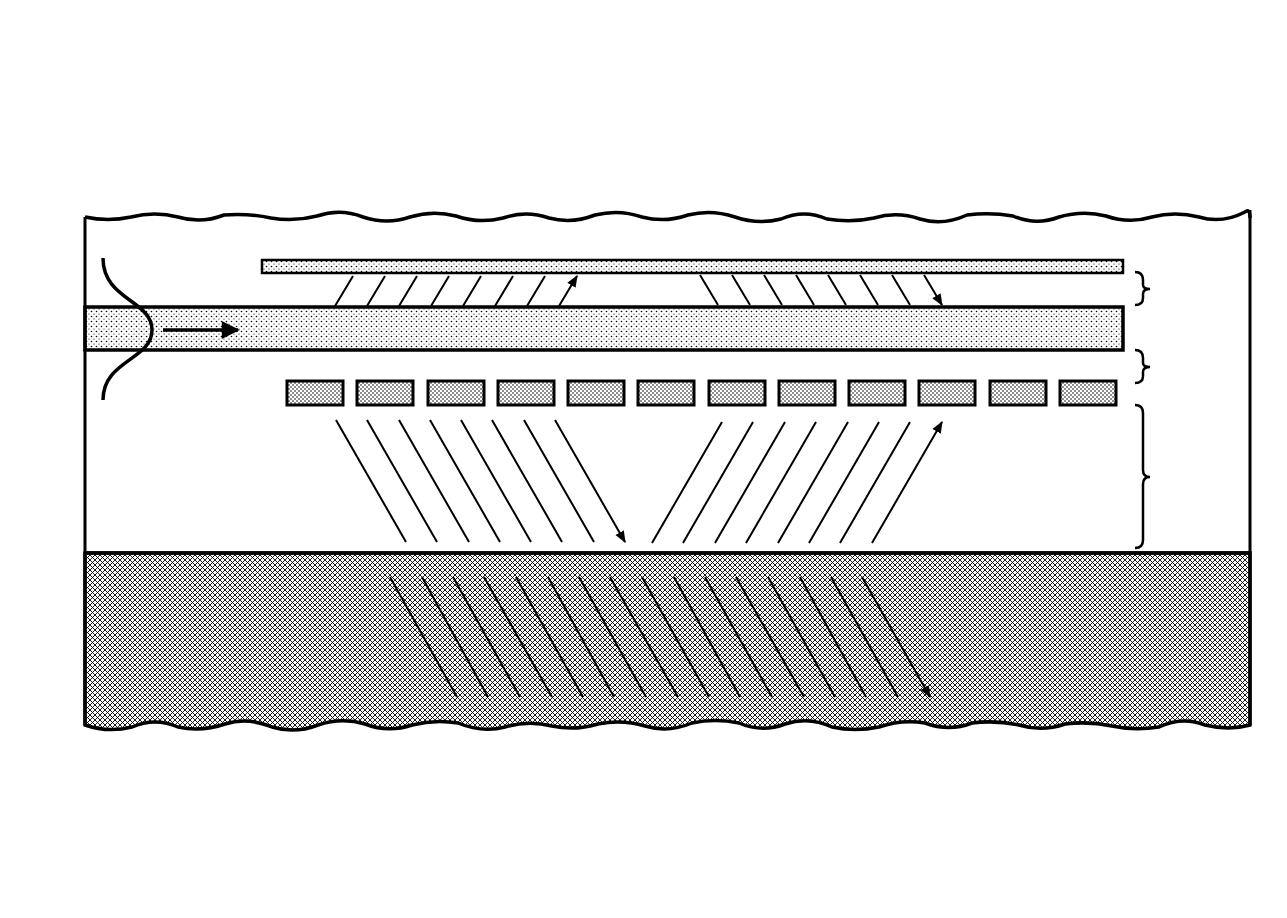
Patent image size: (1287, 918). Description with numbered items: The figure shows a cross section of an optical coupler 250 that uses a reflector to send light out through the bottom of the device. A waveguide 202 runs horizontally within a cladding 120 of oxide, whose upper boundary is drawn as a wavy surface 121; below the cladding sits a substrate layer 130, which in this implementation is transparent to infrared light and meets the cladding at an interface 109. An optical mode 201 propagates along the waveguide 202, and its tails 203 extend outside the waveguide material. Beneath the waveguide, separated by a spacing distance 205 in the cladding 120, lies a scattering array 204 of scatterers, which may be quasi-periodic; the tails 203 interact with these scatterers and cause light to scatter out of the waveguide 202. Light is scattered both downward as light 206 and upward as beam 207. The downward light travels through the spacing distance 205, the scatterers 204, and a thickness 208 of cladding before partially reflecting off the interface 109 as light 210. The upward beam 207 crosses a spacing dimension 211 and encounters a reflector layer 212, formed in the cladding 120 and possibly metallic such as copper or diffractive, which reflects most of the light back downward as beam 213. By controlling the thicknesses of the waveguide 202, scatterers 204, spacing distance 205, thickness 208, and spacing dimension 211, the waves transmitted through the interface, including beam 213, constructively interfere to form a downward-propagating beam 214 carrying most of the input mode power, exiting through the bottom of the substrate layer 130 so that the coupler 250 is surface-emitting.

The optical coupler 250 is at (1191, 89).
The cladding 120 is at (667, 446).
The top surface of medium 121 is at (318, 213).
The substrate layer 130 is at (667, 604).
The interface 109 is at (182, 552).
The optical mode 201 is at (137, 296).
The waveguide 202 is at (1123, 322).
The tails 203 is at (115, 402).
The scattering array 204 is at (298, 409).
The spacing distance 205 is at (1165, 366).
The downward scattered light 206 is at (375, 512).
The beam 207 is at (324, 291).
The thickness 208 is at (1163, 476).
The light 210 is at (913, 490).
The spacing dimension 211 is at (1165, 288).
The reflector layer 212 is at (1130, 258).
The beam 213 is at (955, 291).
The downward-propagating beam of light 214 is at (905, 626).